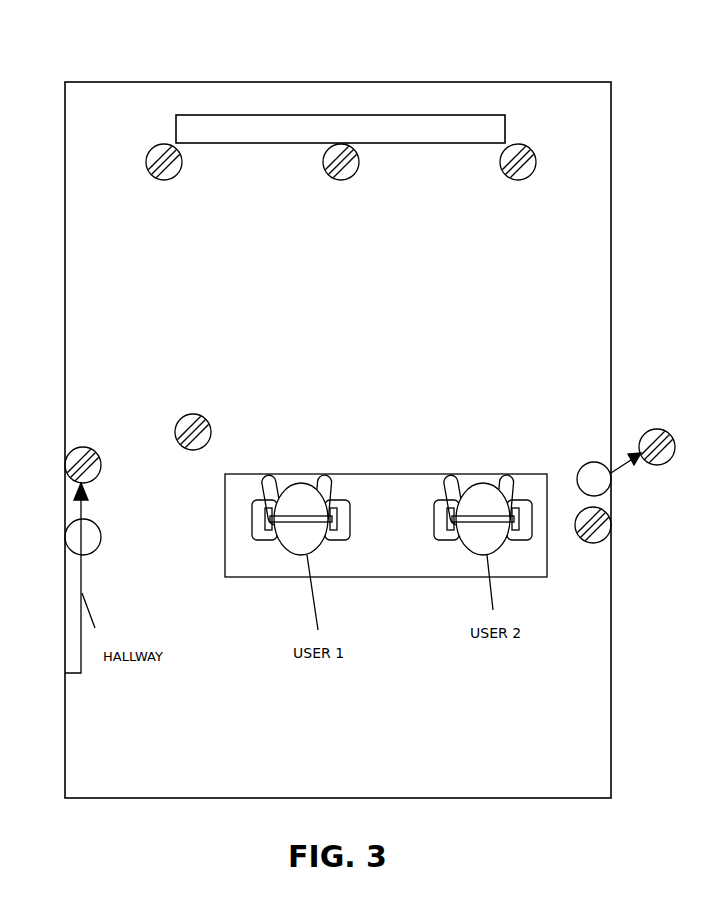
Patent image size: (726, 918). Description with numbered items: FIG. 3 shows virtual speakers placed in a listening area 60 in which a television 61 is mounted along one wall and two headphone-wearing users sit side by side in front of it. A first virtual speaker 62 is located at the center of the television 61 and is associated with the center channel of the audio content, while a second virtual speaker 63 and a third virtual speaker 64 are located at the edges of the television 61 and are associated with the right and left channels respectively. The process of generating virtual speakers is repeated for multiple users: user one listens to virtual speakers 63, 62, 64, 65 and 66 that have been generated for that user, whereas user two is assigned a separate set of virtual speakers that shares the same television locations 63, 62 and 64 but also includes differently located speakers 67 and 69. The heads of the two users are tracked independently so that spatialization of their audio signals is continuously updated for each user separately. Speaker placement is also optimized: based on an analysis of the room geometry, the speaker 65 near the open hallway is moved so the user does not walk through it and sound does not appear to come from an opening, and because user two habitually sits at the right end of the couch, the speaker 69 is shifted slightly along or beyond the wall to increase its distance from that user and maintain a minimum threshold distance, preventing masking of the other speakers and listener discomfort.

The room environment 60 is at (553, 82).
The television 61 is at (341, 115).
The first virtual speaker 62 is at (341, 180).
The second virtual speaker 63 is at (164, 180).
The third virtual speaker 64 is at (518, 180).
The speaker 65 is at (92, 443).
The virtual speaker 66 is at (583, 512).
The speaker 67 is at (202, 415).
The speaker 69 is at (658, 430).